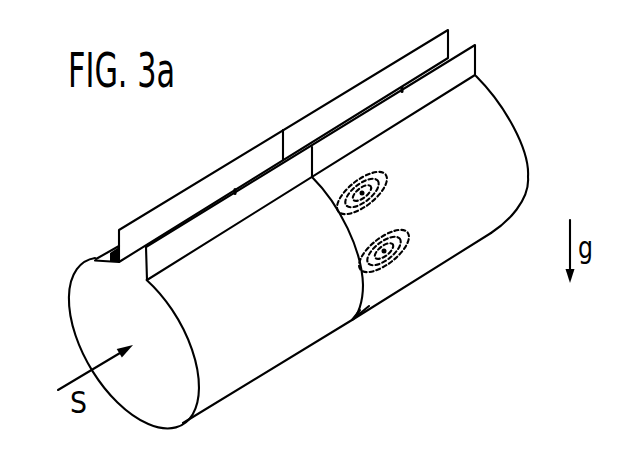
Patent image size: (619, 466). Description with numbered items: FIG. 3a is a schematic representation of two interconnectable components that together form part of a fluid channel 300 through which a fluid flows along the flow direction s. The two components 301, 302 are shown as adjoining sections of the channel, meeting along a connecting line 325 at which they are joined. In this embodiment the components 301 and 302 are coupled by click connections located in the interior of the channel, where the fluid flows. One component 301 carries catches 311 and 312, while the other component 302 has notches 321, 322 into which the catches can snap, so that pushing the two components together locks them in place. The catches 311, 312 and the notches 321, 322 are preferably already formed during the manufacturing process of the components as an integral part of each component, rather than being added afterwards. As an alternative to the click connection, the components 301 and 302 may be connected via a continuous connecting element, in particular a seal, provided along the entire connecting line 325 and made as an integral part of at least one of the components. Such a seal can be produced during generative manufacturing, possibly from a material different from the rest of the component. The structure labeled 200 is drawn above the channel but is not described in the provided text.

The rail assembly 200 is at (297, 140).
The fluid channel 300 is at (298, 255).
The component 301 is at (315, 326).
The component 302 is at (503, 223).
The catch 311 is at (362, 276).
The catch 312 is at (339, 214).
The notch 321 is at (402, 238).
The notch 322 is at (381, 182).
The connecting line 325 is at (369, 306).